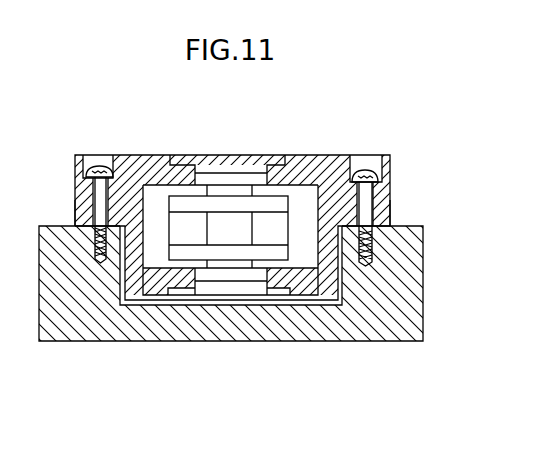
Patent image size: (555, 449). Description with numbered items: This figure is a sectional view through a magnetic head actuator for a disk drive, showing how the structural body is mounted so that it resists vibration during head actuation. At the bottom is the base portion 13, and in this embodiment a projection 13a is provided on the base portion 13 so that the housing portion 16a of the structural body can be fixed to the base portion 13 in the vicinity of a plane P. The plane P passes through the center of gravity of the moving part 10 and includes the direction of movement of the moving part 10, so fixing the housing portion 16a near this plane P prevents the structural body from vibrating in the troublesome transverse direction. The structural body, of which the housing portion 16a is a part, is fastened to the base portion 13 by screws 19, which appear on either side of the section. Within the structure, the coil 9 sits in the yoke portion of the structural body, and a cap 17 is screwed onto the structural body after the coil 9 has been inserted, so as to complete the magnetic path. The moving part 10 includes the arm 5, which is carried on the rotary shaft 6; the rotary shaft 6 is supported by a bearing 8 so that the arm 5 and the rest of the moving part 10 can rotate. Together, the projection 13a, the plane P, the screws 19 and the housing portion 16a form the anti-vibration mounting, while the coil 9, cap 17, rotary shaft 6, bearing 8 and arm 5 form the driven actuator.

The arm 5 is at (282, 232).
The rotary shaft 6 is at (227, 188).
The bearing 8 is at (257, 181).
The coil 9 is at (184, 208).
The moving part 10 is at (296, 203).
The base portion 13 is at (266, 310).
The projection 13a is at (402, 288).
The housing portion 16a is at (165, 155).
The cap 17 is at (297, 165).
The screw 19 is at (106, 165).
The plane P is at (76, 221).